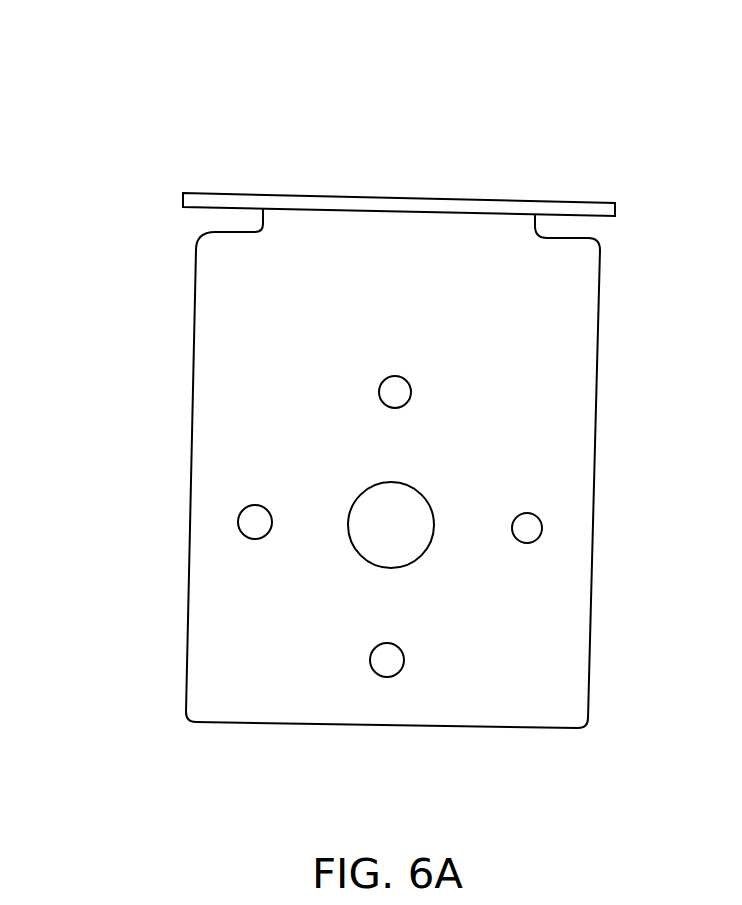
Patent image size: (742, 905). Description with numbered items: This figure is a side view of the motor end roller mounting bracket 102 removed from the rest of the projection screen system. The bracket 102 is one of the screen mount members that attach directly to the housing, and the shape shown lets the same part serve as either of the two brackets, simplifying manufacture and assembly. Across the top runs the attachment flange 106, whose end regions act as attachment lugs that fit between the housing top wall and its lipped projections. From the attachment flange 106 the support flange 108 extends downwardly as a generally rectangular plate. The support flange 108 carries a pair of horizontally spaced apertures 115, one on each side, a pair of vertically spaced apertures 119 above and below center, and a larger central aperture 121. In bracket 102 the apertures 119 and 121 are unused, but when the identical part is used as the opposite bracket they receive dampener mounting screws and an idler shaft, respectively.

The screen mount bracket 102 is at (638, 147).
The attachment flange 106 is at (233, 192).
The support flange 108 is at (280, 356).
The horizontally spaced apertures 115 is at (238, 517).
The vertically spaced apertures 119 is at (412, 388).
The central aperture 121 is at (430, 508).